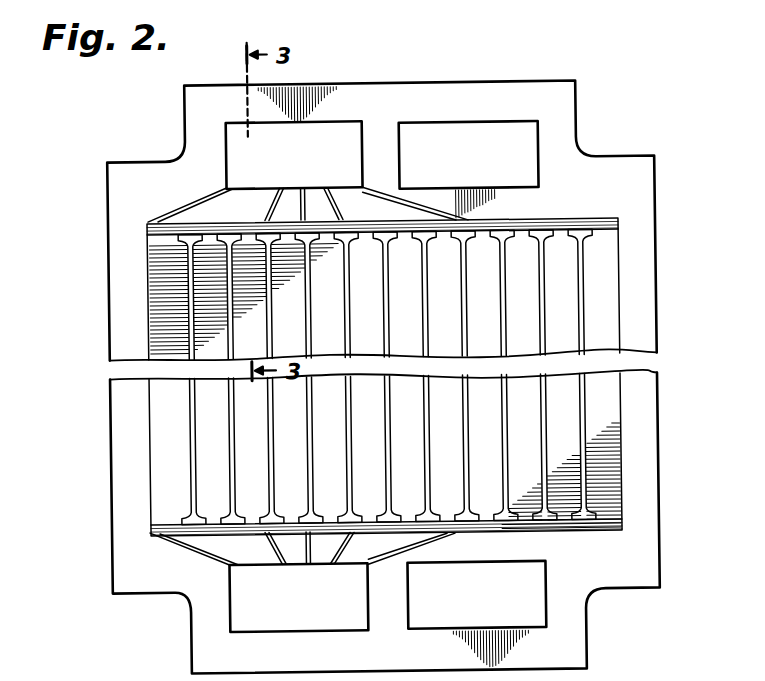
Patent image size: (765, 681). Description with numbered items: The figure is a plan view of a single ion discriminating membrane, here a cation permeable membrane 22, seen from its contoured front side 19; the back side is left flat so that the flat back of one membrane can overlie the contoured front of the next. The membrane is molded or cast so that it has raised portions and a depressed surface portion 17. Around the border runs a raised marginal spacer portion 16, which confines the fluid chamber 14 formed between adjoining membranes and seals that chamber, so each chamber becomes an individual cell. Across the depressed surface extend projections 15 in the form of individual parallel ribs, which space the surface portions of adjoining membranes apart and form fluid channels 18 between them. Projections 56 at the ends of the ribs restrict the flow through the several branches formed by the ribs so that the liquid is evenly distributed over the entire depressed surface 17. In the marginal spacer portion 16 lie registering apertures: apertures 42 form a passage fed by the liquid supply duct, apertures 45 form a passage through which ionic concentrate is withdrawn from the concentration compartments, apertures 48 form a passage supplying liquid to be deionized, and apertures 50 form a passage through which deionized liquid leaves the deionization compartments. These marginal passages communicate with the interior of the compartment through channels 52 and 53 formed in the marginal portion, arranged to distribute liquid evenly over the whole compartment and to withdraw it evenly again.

The fluid chamber 14 is at (616, 321).
The projections 15 is at (541, 283).
The marginal spacer portion 16 is at (639, 228).
The depressed surface portion 17 is at (529, 427).
The fluid channels 18 is at (539, 470).
The front side 19 is at (155, 575).
The cation permeable membrane 22 is at (582, 112).
The apertures 42 is at (229, 601).
The apertures 45 is at (229, 156).
The apertures 48 is at (402, 155).
The apertures 50 is at (407, 590).
The channel 52 is at (348, 550).
The channel 53 is at (310, 199).
The projections at the end of the rib 56 is at (468, 233).